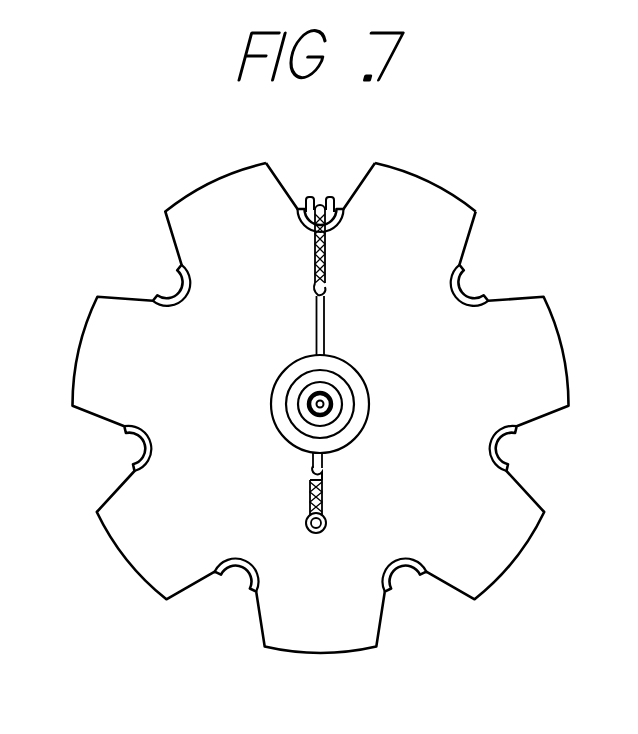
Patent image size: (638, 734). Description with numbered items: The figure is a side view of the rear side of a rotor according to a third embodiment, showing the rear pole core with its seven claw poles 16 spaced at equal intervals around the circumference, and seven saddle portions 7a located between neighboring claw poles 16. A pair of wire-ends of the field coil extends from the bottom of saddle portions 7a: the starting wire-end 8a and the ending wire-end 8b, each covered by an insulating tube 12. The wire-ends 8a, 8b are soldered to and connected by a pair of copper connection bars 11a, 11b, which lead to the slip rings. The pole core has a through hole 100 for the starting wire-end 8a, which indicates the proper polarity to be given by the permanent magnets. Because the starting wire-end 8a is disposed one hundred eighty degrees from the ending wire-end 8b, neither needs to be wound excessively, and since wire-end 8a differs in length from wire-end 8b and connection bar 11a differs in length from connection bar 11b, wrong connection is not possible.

The saddle portion 7a is at (345, 160).
The claw pole 16 is at (445, 210).
The insulating tube 12 is at (328, 246).
The ending wire-end 8b is at (315, 294).
The connection bar 11b is at (326, 330).
The connection bar 11a is at (326, 468).
The starting wire-end 8a is at (310, 471).
The through hole 100 is at (328, 526).